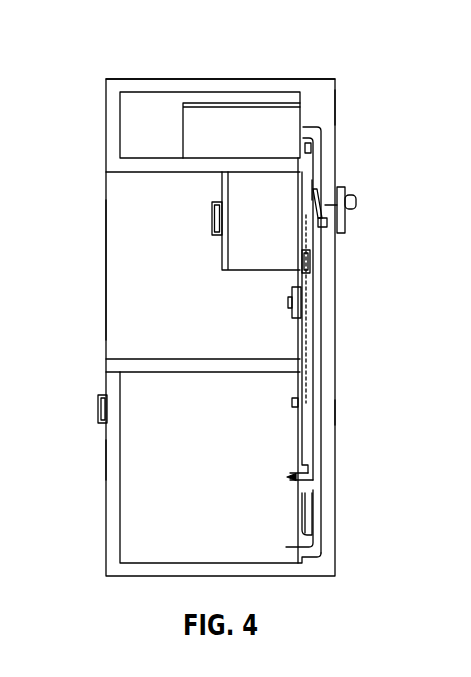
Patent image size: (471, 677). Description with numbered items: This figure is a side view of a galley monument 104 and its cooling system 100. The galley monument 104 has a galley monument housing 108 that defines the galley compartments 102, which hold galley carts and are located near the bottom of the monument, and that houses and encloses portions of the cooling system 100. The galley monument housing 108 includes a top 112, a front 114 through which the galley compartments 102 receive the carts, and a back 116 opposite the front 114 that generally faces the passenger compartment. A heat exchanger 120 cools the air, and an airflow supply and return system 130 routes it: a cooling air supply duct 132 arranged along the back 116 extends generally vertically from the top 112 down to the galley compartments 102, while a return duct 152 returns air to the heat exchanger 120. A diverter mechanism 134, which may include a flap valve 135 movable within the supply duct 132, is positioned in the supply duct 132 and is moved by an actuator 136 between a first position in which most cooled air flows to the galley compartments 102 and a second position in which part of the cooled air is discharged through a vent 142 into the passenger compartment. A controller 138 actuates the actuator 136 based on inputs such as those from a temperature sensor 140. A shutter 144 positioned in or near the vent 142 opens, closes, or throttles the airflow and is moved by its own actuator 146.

The cooling system 100 is at (175, 57).
The galley compartments 102 is at (148, 527).
The galley monument 104 is at (103, 309).
The galley monument housing 108 is at (327, 105).
The top 112 is at (316, 79).
The front 114 is at (105, 463).
The back 116 is at (336, 411).
The heat exchanger 120 is at (233, 126).
The airflow supply and return system 130 is at (326, 331).
The cooling air supply duct 132 is at (317, 367).
The diverter mechanism 134 is at (328, 188).
The valve 135 is at (311, 192).
The actuator 136 is at (310, 259).
The controller 138 is at (322, 228).
The temperature sensor 140 is at (292, 402).
The vent 142 is at (347, 205).
The shutter 144 is at (348, 188).
The actuator 146 is at (350, 212).
The return duct 152 is at (320, 518).